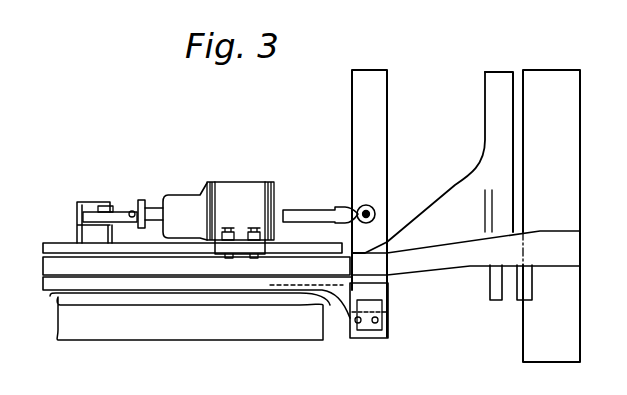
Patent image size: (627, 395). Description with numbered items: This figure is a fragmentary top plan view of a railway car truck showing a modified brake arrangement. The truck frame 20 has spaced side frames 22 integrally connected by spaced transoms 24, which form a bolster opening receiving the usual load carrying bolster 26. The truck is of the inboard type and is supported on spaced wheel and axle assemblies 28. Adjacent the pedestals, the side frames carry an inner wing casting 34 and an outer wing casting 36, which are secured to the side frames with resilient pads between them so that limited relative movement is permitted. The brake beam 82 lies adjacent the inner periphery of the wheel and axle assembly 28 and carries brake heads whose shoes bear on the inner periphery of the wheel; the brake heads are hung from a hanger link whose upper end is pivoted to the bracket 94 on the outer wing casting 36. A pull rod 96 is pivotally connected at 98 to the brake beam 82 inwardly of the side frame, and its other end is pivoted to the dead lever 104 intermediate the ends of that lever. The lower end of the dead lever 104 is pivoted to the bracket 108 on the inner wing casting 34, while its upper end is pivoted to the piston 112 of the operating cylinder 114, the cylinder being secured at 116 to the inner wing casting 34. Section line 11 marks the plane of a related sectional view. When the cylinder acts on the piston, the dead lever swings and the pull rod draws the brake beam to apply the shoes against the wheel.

The section line 11 is at (408, 127).
The truck frame 20 is at (470, 258).
The side frames 22 is at (430, 262).
The transoms 24 is at (497, 96).
The bolster 26 is at (530, 342).
The wheel and axle assemblies 28 is at (285, 340).
The inner wing casting 34 is at (59, 245).
The outer wing casting 36 is at (48, 284).
The brake beam 82 is at (362, 110).
The bracket 94 is at (388, 322).
The pull rod 96 is at (307, 210).
The pivotal connection 98 is at (375, 210).
The dead lever 104 is at (108, 213).
The bracket 108 is at (88, 202).
The piston 112 is at (154, 198).
The operating cylinder 114 is at (238, 182).
The securing point 116 is at (250, 227).